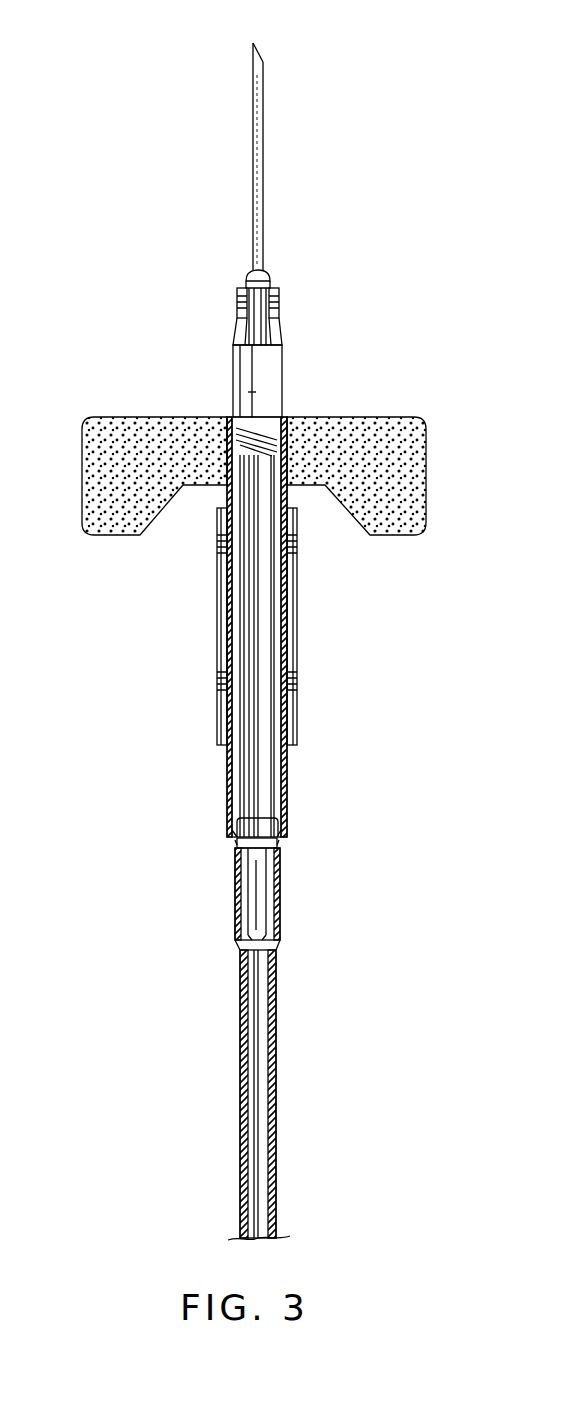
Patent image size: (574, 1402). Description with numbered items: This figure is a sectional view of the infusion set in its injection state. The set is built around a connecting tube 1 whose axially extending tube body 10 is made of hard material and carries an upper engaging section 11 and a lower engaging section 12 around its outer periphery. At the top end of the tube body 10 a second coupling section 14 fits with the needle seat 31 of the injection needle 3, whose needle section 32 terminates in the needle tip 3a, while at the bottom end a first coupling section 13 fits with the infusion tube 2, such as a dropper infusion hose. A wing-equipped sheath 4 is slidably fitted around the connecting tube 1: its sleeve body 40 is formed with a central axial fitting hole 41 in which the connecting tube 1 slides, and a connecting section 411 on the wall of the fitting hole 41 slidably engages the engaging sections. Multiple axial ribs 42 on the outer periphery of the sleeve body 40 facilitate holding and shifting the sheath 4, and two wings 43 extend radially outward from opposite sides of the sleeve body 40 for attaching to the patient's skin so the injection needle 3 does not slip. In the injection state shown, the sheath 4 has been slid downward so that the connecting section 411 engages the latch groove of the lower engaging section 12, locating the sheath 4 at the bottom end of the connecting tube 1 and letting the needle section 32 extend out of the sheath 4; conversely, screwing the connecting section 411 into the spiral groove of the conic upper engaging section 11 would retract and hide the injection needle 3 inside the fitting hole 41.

The connecting tube 1 is at (262, 720).
The infusion tube 2 is at (273, 1078).
The injection needle 3 is at (275, 274).
The needle tip 3a is at (253, 43).
The wing-equipped sheath 4 is at (214, 553).
The tube body 10 is at (260, 767).
The upper engaging section 11 is at (288, 428).
The lower engaging section 12 is at (266, 812).
The first coupling section 13 is at (262, 882).
The second coupling section 14 is at (243, 392).
The needle seat 31 is at (272, 365).
The needle section 32 is at (263, 148).
The sleeve body 40 is at (228, 802).
The fitting hole 41 is at (279, 640).
The axial ribs 42 is at (298, 565).
The wings 43 is at (120, 440).
The connecting section 411 is at (280, 848).